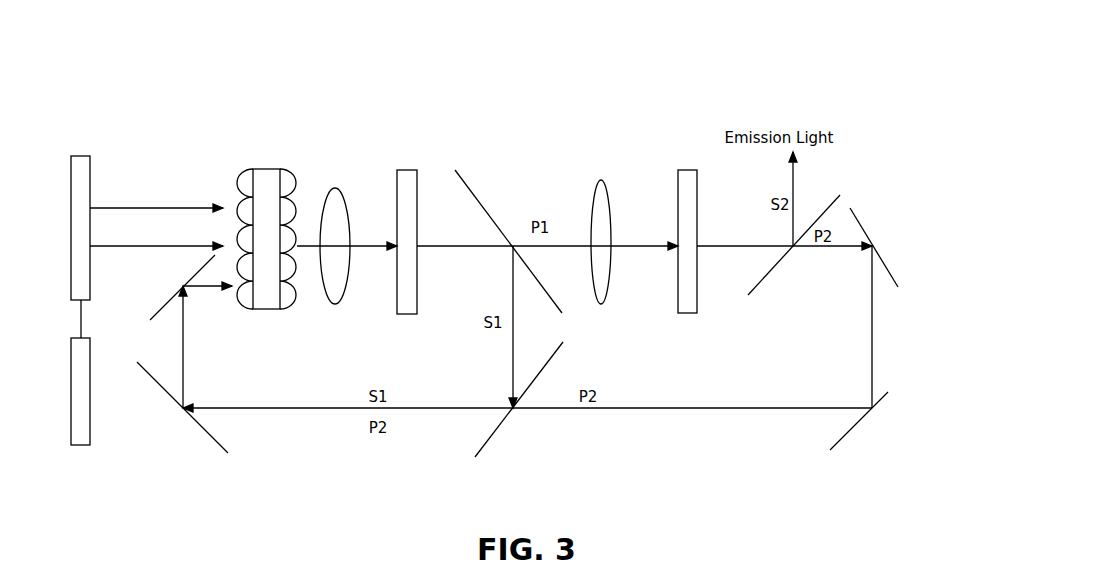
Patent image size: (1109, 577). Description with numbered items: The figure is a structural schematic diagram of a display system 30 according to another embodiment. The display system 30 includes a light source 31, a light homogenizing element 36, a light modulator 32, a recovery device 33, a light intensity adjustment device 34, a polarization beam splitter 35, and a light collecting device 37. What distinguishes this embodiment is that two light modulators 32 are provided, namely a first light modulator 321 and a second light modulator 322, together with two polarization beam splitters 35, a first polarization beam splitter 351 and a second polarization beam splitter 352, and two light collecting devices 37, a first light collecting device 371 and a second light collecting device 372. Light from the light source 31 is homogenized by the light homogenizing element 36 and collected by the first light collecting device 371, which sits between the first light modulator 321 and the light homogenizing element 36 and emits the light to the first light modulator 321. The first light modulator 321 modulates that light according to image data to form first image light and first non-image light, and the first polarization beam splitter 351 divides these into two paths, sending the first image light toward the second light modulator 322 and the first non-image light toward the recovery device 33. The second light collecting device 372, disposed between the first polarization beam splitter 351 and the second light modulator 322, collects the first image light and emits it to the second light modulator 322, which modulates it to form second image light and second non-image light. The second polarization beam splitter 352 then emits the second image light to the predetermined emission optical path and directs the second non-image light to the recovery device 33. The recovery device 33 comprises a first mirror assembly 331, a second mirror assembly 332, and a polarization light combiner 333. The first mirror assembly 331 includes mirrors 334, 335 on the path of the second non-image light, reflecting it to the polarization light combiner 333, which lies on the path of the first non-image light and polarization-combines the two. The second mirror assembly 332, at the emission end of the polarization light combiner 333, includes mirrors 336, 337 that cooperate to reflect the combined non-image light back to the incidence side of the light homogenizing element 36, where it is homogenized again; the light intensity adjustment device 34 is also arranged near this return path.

The display system 30 is at (491, 34).
The light source 31 is at (82, 155).
The light modulator 32 is at (547, 188).
The recovery device 33 is at (535, 372).
The light intensity adjustment device 34 is at (90, 425).
The polarization beam splitter 35 is at (834, 193).
The light homogenizing element 36 is at (255, 170).
The light collecting device 37 is at (327, 181).
The first light modulator 321 is at (405, 170).
The second light modulator 322 is at (641, 212).
The first mirror assembly 331 is at (916, 215).
The second mirror assembly 332 is at (151, 382).
The polarization light combiner 333 is at (475, 457).
The mirror 334 is at (878, 253).
The mirror 335 is at (838, 435).
The mirror 336 is at (213, 438).
The mirror 337 is at (165, 305).
The first polarization beam splitter 351 is at (466, 185).
The second polarization beam splitter 352 is at (820, 218).
The first light collecting device 371 is at (342, 188).
The second light collecting device 372 is at (598, 180).